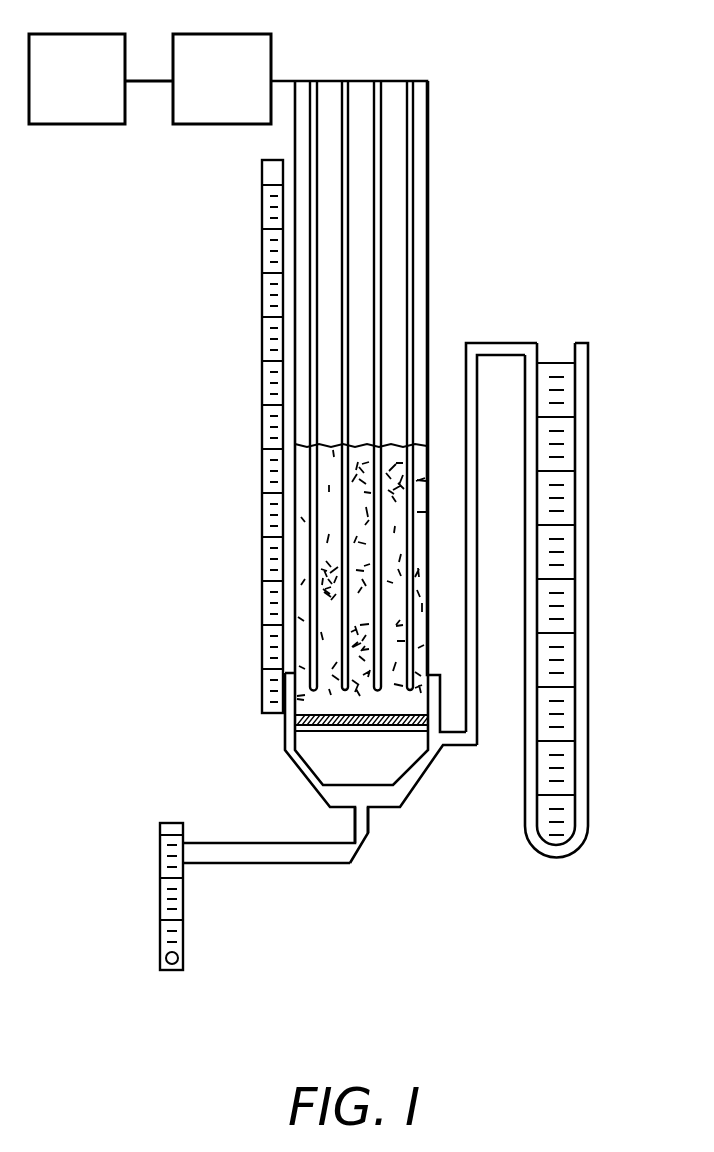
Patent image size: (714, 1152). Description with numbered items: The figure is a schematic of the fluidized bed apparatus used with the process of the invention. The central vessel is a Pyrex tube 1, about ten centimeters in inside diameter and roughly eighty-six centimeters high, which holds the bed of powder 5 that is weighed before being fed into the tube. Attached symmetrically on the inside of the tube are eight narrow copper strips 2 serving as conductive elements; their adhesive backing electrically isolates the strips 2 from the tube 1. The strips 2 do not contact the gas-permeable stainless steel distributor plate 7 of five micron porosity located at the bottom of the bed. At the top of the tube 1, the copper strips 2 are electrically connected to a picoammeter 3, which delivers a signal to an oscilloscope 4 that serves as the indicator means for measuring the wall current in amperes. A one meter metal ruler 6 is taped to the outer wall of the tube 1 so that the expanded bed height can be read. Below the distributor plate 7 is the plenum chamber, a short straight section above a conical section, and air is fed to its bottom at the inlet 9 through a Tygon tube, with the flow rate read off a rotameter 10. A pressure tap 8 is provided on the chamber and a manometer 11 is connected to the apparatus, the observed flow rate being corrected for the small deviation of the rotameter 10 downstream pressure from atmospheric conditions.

The Pyrex tube 1 is at (428, 173).
The copper strips 2 is at (410, 81).
The picoammeter 3 is at (214, 88).
The oscilloscope 4 is at (69, 88).
The powder 5 is at (328, 512).
The metal ruler 6 is at (262, 283).
The distributor plate 7 is at (285, 726).
The pressure tap 8 is at (443, 747).
The inlet 9 is at (370, 812).
The rotameter 10 is at (185, 905).
The manometer 11 is at (588, 397).